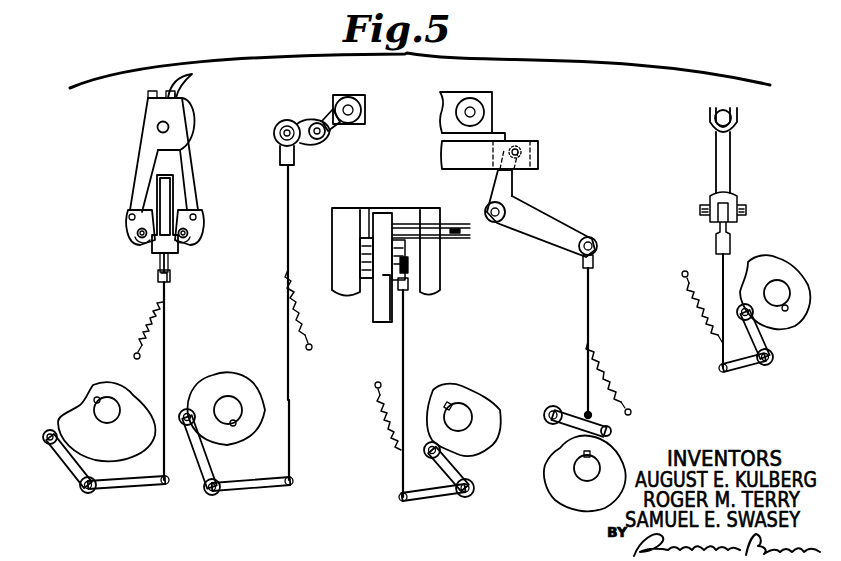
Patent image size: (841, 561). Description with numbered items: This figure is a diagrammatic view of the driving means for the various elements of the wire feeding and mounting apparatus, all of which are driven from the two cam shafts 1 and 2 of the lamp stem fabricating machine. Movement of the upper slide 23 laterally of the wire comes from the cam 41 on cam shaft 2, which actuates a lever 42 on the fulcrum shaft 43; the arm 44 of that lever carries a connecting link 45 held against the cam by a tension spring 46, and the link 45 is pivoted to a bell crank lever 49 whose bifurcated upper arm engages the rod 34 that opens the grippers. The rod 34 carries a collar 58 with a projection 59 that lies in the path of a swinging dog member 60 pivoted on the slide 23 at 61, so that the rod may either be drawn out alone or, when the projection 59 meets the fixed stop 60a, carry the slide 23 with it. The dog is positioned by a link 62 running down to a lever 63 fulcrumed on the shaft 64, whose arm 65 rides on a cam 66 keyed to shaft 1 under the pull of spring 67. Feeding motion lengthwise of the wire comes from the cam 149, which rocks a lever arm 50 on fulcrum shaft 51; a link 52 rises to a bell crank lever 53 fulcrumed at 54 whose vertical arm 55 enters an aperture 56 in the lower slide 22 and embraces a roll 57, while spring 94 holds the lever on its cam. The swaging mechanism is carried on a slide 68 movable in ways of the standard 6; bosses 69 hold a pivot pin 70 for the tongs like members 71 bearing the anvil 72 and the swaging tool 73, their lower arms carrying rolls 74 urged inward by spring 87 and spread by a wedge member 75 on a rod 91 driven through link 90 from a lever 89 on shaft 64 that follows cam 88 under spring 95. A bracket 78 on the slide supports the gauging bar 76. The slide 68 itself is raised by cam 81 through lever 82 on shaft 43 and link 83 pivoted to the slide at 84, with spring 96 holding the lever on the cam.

The cam shaft 1 is at (107, 410).
The cam shaft 2 is at (460, 418).
The standard 6 is at (430, 208).
The lower slide 22 is at (540, 150).
The upper slide 23 is at (493, 95).
The rod 34 is at (344, 106).
The cam 41 is at (758, 265).
The lever 42 is at (758, 336).
The fulcrum shaft 43 is at (464, 498).
The arm 44 is at (745, 368).
The connecting link 45 is at (698, 243).
The tension spring 46 is at (686, 312).
The bell crank lever 49 is at (732, 163).
The lever arm 50 is at (580, 418).
The fulcrum shaft 51 is at (541, 386).
The link 52 is at (589, 297).
The bell crank lever 53 is at (535, 240).
The fulcrum 54 is at (494, 223).
The vertical arm 55 is at (522, 148).
The aperture 56 is at (528, 158).
The roll 57 is at (518, 148).
The collar 58 is at (366, 117).
The projection 59 is at (333, 124).
The dog member 60 is at (312, 150).
The fixed stop 60a is at (320, 142).
The pivot 61 is at (310, 125).
The link 62 is at (288, 250).
The lever 63 is at (250, 486).
The shaft 64 is at (92, 494).
The arm 65 is at (202, 456).
The cam 66 is at (198, 365).
The spring 67 is at (300, 312).
The slide 68 is at (325, 243).
The bosses 69 is at (370, 212).
The pivot pin 70 is at (158, 128).
The tongs like members 71 is at (196, 82).
The anvil 72 is at (176, 94).
The swaging tool 73 is at (152, 94).
The rolls 74 is at (212, 243).
The wedge member 75 is at (170, 250).
The horizontal bar 76 is at (449, 226).
The bracket 78 is at (410, 246).
The cam 81 is at (484, 443).
The lever 82 is at (428, 500).
The link 83 is at (406, 344).
The pivot 84 is at (410, 265).
The tension spring 87 is at (155, 215).
The cam 88 is at (78, 372).
The lever 89 is at (68, 470).
The link 90 is at (166, 326).
The rod 91 is at (150, 270).
The spring 94 is at (600, 362).
The spring 95 is at (140, 308).
The spring 96 is at (372, 438).
The cam 149 is at (568, 497).